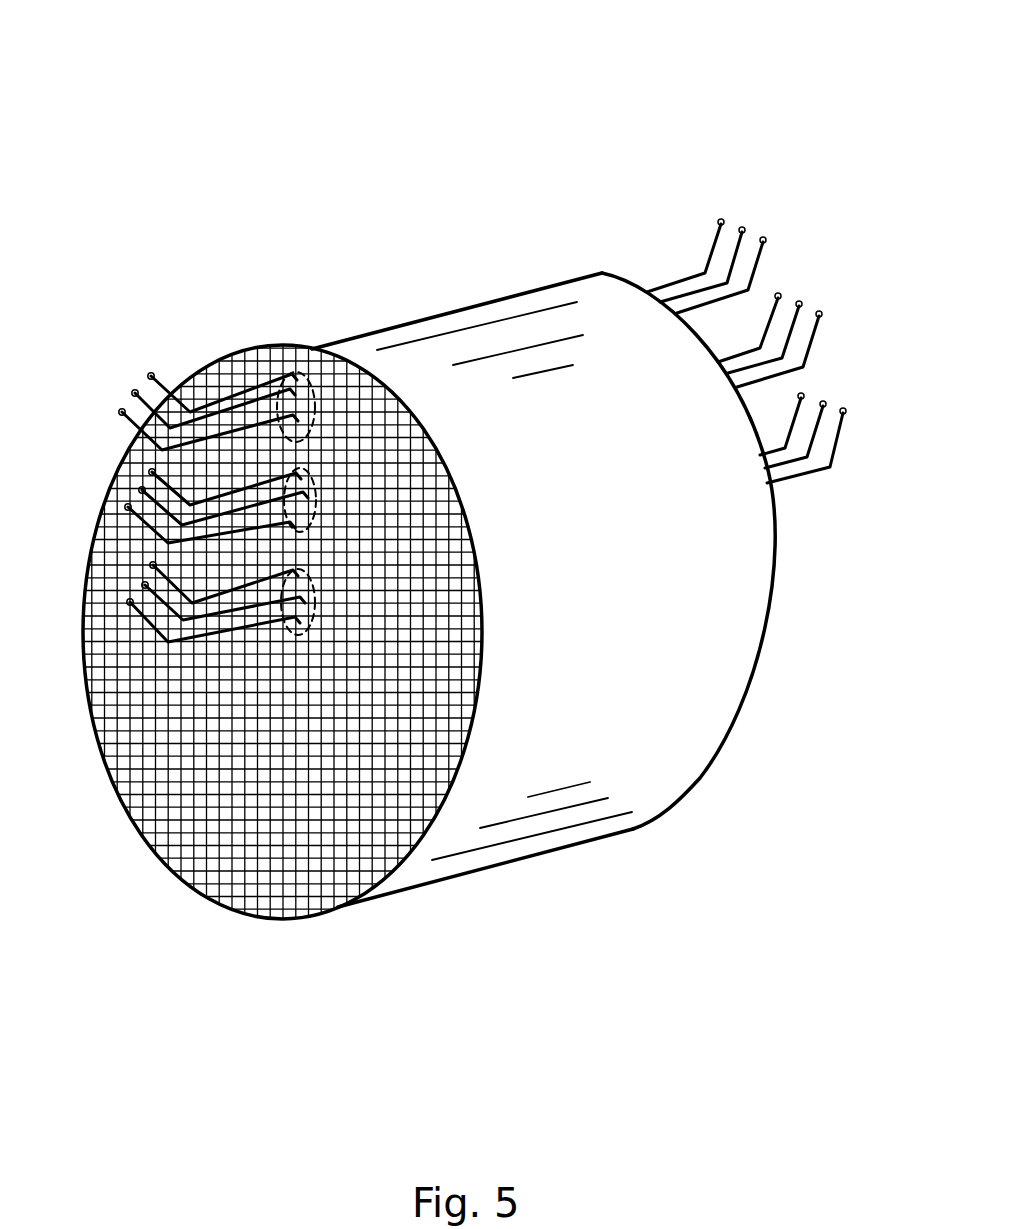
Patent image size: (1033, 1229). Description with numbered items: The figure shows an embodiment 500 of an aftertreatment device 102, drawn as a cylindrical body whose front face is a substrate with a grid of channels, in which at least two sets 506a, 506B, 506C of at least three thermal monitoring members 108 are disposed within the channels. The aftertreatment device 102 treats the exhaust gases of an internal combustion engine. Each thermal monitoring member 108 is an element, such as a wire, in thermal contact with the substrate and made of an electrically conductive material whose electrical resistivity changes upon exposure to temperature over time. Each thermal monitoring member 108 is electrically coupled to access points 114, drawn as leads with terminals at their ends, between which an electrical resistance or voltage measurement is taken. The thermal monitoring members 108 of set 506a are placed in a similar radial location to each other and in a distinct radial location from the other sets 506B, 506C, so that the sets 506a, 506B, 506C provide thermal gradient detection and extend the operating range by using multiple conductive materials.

The sensor assembly 500 is at (78, 58).
The aftertreatment device 102 is at (431, 319).
The thermal monitoring member 108 is at (226, 402).
The access points 114 is at (150, 373).
The set of thermal monitoring members 506a is at (316, 441).
The set of thermal monitoring members 506B is at (318, 531).
The set of thermal monitoring members 506C is at (318, 633).